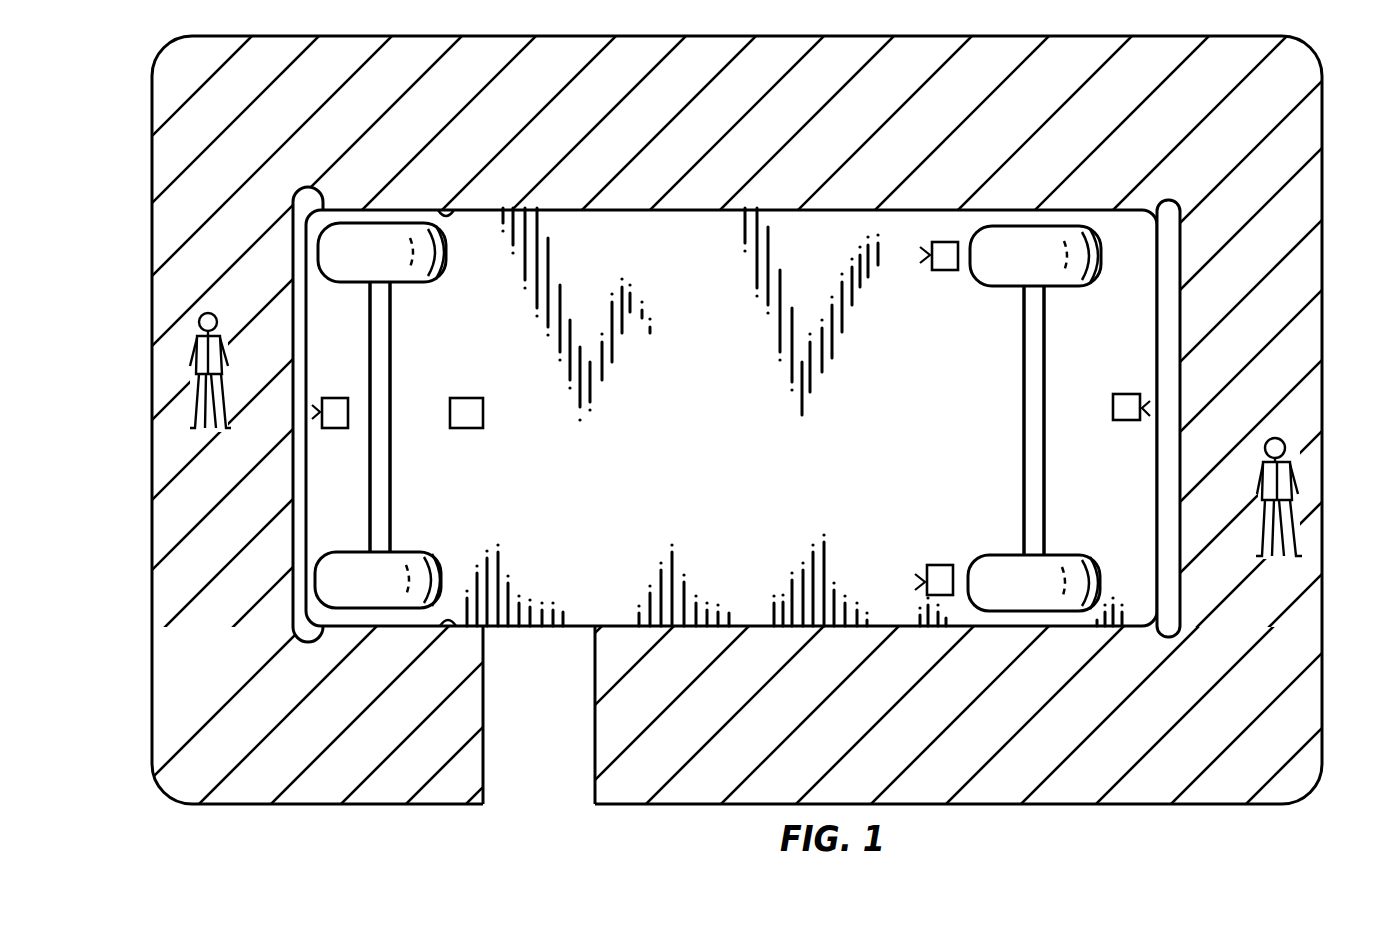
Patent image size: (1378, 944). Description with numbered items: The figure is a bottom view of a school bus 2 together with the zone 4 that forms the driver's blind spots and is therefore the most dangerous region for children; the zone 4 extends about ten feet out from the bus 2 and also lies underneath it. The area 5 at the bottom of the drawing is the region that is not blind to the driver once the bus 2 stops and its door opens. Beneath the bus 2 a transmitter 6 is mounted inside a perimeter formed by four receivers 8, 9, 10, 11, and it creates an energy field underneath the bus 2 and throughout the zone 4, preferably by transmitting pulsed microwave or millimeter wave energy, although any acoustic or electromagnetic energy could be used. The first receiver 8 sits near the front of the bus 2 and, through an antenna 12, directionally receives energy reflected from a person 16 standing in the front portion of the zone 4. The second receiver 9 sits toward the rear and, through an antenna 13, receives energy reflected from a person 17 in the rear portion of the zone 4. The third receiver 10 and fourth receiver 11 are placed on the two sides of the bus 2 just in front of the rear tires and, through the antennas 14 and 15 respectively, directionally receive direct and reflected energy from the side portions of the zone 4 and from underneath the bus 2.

The school bus 2 is at (1183, 311).
The zone 4 is at (722, 38).
The area 5 is at (529, 778).
The transmitter 6 is at (466, 429).
The first receiver 8 is at (336, 431).
The second receiver 9 is at (1125, 422).
The third receiver 10 is at (954, 273).
The fourth receiver 11 is at (942, 563).
The antenna 12 is at (319, 411).
The antenna 13 is at (1143, 407).
The antenna 14 is at (928, 256).
The antenna 15 is at (924, 582).
The person 16 is at (196, 344).
The person 17 is at (1287, 446).